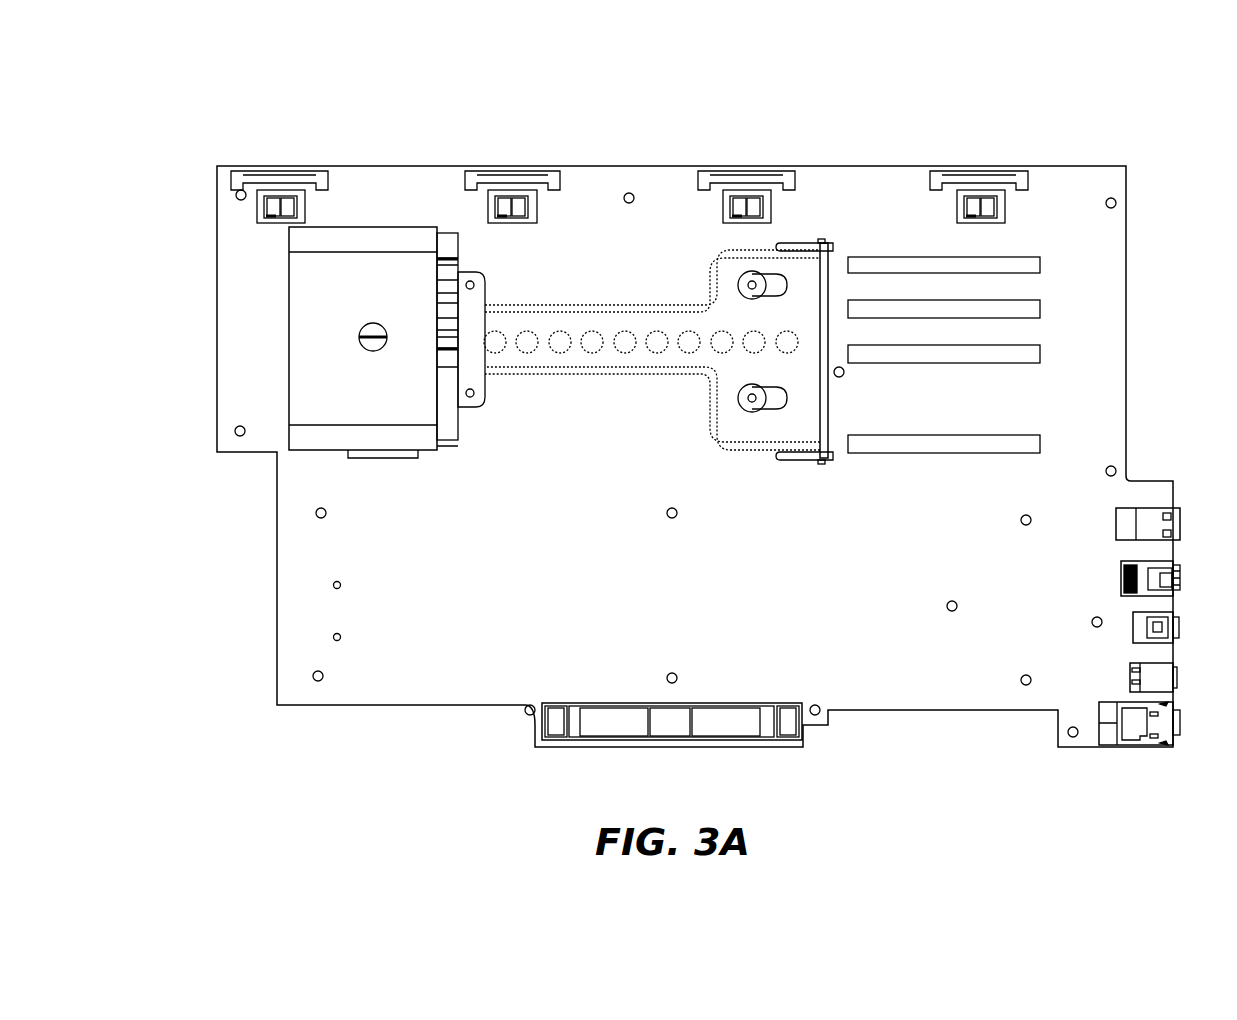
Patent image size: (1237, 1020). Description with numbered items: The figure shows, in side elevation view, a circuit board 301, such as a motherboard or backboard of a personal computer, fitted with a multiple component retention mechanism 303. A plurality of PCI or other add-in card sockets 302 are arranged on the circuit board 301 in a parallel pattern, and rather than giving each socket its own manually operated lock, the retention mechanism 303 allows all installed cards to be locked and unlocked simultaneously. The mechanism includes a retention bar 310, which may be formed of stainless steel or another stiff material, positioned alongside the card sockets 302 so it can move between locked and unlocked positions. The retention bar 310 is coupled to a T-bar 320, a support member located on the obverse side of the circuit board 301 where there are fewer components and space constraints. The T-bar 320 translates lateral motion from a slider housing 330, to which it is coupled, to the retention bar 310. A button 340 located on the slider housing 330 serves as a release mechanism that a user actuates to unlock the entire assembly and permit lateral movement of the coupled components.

The circuit board 301 is at (698, 456).
The add-in card sockets 302 is at (1040, 440).
The component retention mechanism 303 is at (257, 113).
The retention bar 310 is at (823, 243).
The T-bar 320 is at (594, 332).
The slider housing 330 is at (348, 267).
The button 340 is at (371, 352).